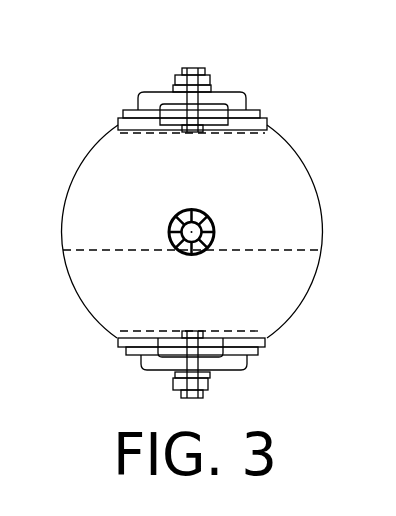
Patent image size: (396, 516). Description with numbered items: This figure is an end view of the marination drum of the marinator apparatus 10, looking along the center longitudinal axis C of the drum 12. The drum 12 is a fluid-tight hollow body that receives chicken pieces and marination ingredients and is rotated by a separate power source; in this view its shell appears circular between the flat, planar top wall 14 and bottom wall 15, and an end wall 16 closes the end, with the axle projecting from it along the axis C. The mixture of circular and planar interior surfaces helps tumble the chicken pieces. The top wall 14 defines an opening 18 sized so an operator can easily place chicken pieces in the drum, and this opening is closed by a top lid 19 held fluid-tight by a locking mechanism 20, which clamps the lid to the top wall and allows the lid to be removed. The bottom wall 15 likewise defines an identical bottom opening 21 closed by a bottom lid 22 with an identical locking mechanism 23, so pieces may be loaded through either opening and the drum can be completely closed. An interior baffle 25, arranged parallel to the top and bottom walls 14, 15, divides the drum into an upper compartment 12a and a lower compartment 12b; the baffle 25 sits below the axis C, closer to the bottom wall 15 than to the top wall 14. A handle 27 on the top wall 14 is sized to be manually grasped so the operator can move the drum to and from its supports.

The marinator apparatus 10 is at (330, 221).
The hollow drum 12 is at (62, 268).
The upper compartment 12a is at (293, 177).
The lower compartment 12b is at (100, 286).
The top wall 14 is at (118, 124).
The bottom wall 15 is at (117, 338).
The end wall 16 is at (258, 224).
The opening 18 is at (265, 118).
The top lid 19 is at (248, 108).
The locking mechanism 20 is at (180, 71).
The bottom opening 21 is at (265, 341).
The bottom lid 22 is at (249, 355).
The locking mechanism 23 is at (200, 401).
The interior baffle 25 is at (128, 240).
The handle 27 is at (163, 100).
The center longitudinal axis C is at (192, 231).